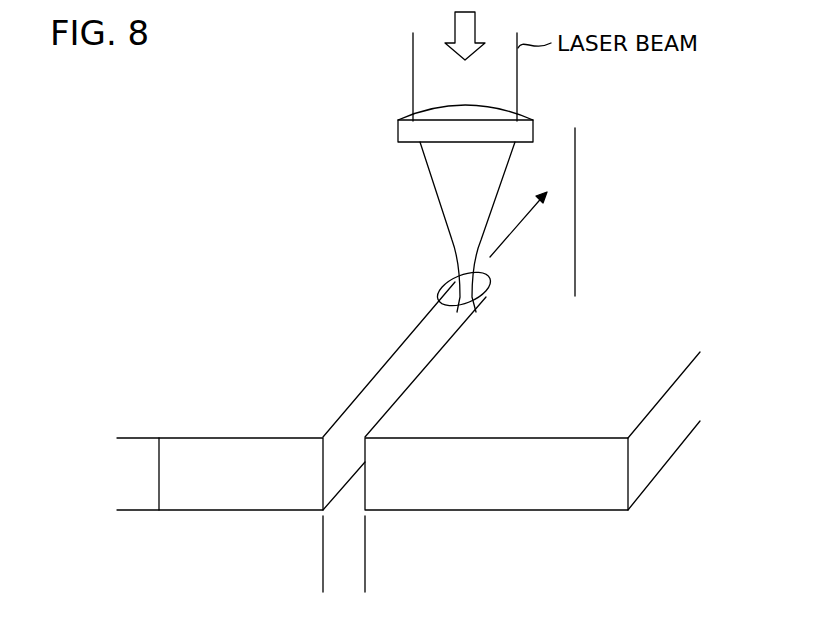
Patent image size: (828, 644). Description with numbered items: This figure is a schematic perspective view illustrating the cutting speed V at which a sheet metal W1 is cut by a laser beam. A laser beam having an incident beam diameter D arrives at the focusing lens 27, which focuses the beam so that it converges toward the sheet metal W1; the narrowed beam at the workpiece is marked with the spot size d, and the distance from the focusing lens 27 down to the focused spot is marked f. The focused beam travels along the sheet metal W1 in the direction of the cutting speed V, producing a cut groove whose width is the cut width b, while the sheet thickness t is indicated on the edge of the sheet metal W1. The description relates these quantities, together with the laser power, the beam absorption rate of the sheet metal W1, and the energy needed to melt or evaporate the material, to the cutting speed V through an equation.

The focusing lens 27 is at (398, 127).
The sheet metal W1 is at (571, 511).
The incident beam diameter D is at (517, 87).
The focused spot diameter d is at (481, 292).
The focal length f is at (533, 128).
The cutting speed V is at (522, 214).
The sheet thickness t is at (156, 447).
The cut width b is at (365, 580).